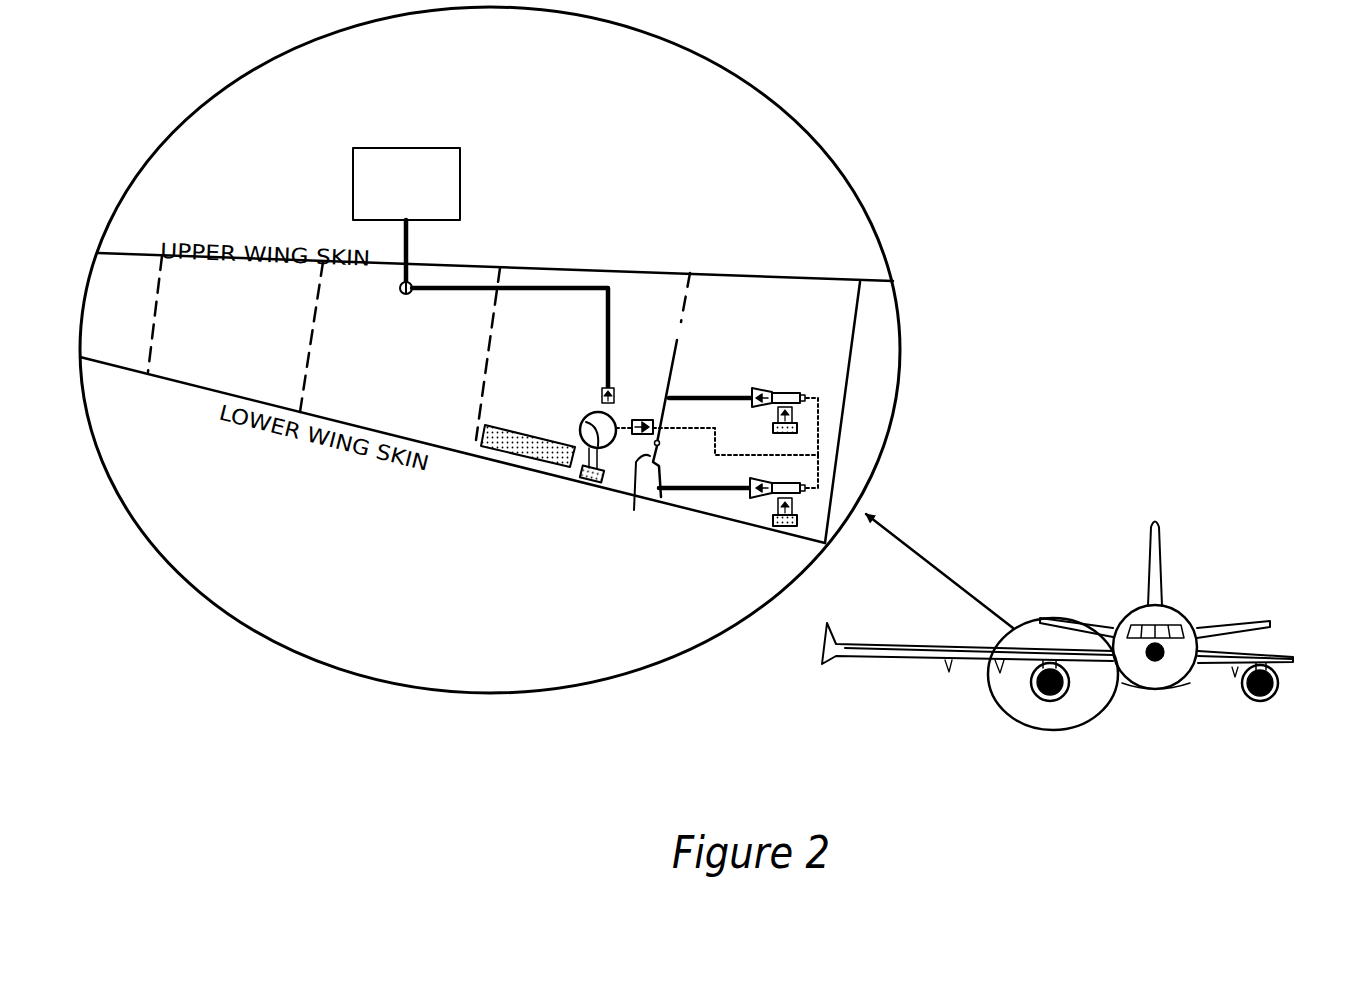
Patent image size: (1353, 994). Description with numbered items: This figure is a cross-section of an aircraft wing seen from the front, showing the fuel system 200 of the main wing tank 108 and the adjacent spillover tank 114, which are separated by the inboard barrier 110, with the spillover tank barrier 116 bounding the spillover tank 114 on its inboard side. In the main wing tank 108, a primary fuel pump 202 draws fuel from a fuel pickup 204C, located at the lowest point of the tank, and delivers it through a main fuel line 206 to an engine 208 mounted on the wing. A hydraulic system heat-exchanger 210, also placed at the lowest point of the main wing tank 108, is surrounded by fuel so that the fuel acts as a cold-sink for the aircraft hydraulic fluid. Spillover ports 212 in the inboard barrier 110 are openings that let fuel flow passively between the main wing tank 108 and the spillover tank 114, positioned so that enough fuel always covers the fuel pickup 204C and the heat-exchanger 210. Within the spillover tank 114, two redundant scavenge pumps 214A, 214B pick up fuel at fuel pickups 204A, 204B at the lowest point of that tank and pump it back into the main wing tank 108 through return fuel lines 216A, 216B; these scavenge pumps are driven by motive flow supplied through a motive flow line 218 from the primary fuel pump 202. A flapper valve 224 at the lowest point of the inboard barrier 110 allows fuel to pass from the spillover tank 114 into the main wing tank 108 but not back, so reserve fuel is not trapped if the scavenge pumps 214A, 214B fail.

The aircraft fuel system environment 200 is at (978, 176).
The main wing tank 108 is at (416, 391).
The inboard barrier 110 is at (675, 365).
The spillover tank 114 is at (788, 364).
The spillover tank barrier 116 is at (865, 303).
The primary fuel pump 202 is at (582, 427).
The fuel pickup 204A is at (797, 423).
The fuel pickup 204B is at (783, 528).
The fuel pickup 204C is at (590, 482).
The main fuel line 206 is at (583, 291).
The engine 208 is at (424, 211).
The hydraulic system heat-exchanger 210 is at (525, 462).
The spillover ports 212 is at (671, 328).
The scavenge pump 214A is at (797, 384).
The scavenge pump 214B is at (795, 480).
The return fuel line 216A is at (726, 394).
The return fuel line 216B is at (727, 490).
The motive flow line 218 is at (700, 430).
The flapper valve 224 is at (641, 489).